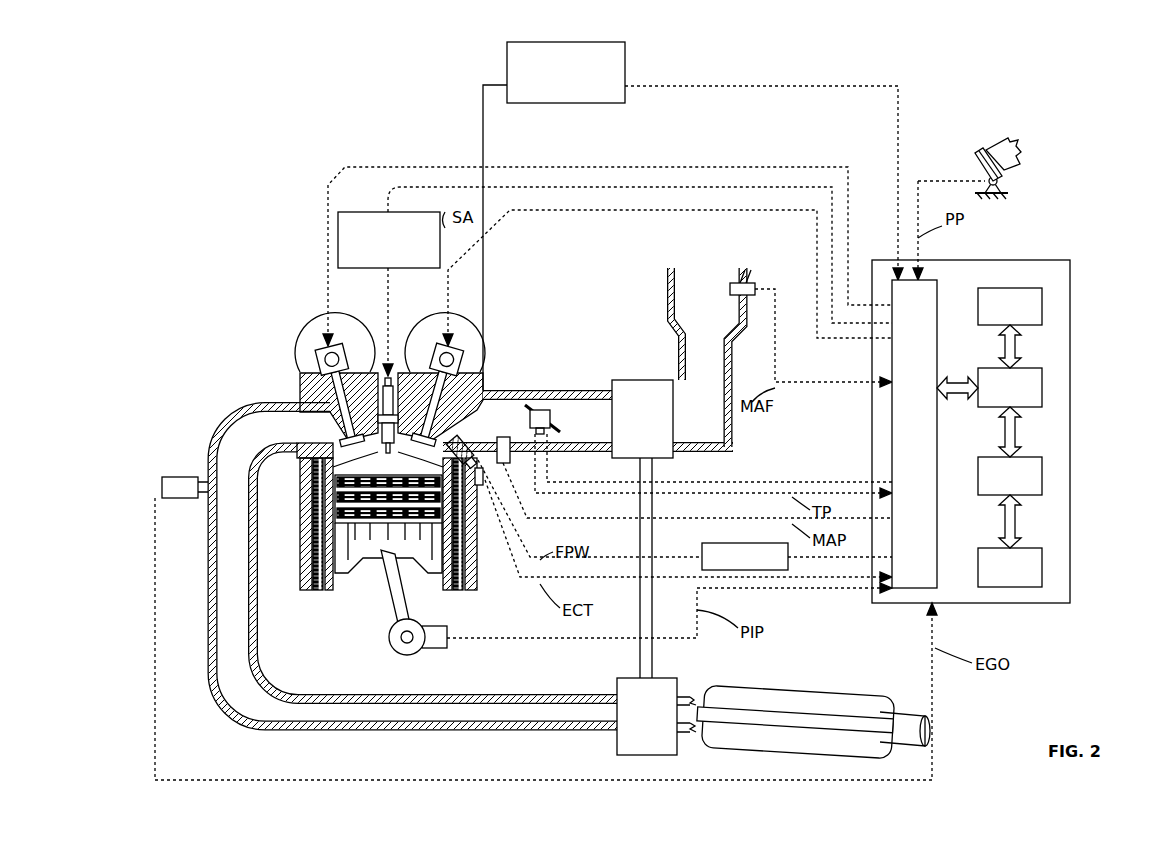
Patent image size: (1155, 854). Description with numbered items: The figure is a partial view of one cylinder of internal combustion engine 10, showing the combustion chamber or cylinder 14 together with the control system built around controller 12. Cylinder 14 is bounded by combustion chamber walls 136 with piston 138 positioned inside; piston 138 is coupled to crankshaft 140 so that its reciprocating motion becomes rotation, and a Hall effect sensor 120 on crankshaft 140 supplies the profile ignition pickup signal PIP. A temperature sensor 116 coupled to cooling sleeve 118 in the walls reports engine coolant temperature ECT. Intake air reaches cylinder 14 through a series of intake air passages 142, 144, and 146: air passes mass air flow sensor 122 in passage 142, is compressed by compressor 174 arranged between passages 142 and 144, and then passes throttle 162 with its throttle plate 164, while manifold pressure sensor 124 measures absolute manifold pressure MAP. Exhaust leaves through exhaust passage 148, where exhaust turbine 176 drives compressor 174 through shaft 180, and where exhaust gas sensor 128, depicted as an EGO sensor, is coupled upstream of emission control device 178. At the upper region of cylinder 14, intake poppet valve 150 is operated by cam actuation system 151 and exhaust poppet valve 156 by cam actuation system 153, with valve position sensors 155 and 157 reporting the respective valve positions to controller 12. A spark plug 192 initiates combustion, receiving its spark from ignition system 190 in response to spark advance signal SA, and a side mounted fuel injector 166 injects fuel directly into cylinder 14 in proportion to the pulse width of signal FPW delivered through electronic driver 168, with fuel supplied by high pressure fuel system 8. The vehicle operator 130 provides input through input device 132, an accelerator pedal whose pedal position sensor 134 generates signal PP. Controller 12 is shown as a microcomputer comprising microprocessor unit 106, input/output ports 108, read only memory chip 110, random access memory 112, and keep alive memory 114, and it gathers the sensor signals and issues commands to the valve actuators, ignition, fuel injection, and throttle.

The high pressure fuel system 8 is at (625, 50).
The internal combustion engine 10 is at (152, 114).
The controller 12 is at (1072, 262).
The cylinder 14 is at (305, 480).
The microprocessor unit 106 is at (1044, 385).
The input/output ports 108 is at (940, 290).
The read only memory chip 110 is at (1044, 302).
The random access memory 112 is at (1044, 472).
The keep alive memory 114 is at (1044, 564).
The temperature sensor 116 is at (482, 490).
The cooling sleeve 118 is at (475, 588).
The Hall effect sensor 120 is at (442, 650).
The mass air flow sensor 122 is at (748, 280).
The manifold pressure sensor 124 is at (508, 468).
The exhaust gas sensor 128 is at (162, 478).
The vehicle operator 130 is at (1020, 146).
The input device 132 is at (974, 162).
The pedal position sensor 134 is at (1003, 182).
The combustion chamber walls 136 is at (335, 580).
The piston 138 is at (372, 548).
The crankshaft 140 is at (393, 652).
The intake air passage 142 is at (718, 314).
The intake air passage 144 is at (604, 430).
The intake air passage 146 is at (513, 430).
The exhaust passage 148 is at (292, 440).
The intake poppet valve 150 is at (400, 432).
The cam actuation system 151 is at (444, 342).
The cam actuation system 153 is at (342, 342).
The valve position sensor 155 is at (462, 356).
The exhaust poppet valve 156 is at (345, 418).
The valve position sensor 157 is at (308, 348).
The throttle 162 is at (540, 406).
The throttle plate 164 is at (512, 402).
The fuel injector 166 is at (666, 492).
The electronic driver 168 is at (704, 545).
The compressor 174 is at (643, 380).
The exhaust turbine 176 is at (617, 745).
The emission control device 178 is at (855, 698).
The shaft 180 is at (652, 655).
The ignition system 190 is at (355, 212).
The spark plug 192 is at (382, 408).